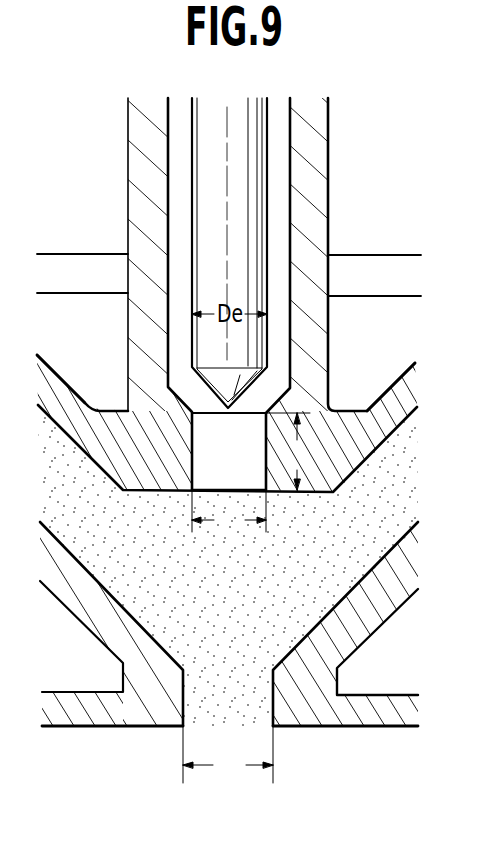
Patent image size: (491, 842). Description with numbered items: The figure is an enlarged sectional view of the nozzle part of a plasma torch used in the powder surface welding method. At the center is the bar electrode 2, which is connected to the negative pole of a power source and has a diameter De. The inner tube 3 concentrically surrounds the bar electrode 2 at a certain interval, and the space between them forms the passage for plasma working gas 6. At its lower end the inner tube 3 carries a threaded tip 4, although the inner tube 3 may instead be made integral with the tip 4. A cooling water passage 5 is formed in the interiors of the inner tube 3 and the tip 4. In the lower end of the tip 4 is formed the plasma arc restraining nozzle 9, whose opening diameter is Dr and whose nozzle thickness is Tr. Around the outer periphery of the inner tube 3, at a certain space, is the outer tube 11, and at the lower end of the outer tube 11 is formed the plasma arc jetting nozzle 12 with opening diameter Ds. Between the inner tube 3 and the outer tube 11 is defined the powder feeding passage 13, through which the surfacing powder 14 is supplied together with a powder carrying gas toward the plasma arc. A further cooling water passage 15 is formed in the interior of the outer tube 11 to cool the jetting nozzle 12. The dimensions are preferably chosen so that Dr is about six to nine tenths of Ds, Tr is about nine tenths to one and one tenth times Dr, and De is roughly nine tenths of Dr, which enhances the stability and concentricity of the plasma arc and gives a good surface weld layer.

The bar electrode 2 is at (242, 205).
The inner tube 3 is at (245, 275).
The tip 4 is at (302, 348).
The passage for plasma working gas 6 is at (284, 248).
The cooling water passage 5 is at (360, 383).
The plasma arc restraining nozzle 9 is at (266, 467).
The surfacing powder 14 is at (387, 461).
The powder feeding passage 13 is at (374, 568).
The outer tube 11 is at (363, 617).
The plasma arc jetting nozzle 12 is at (184, 688).
The cooling water passage 15 is at (371, 673).